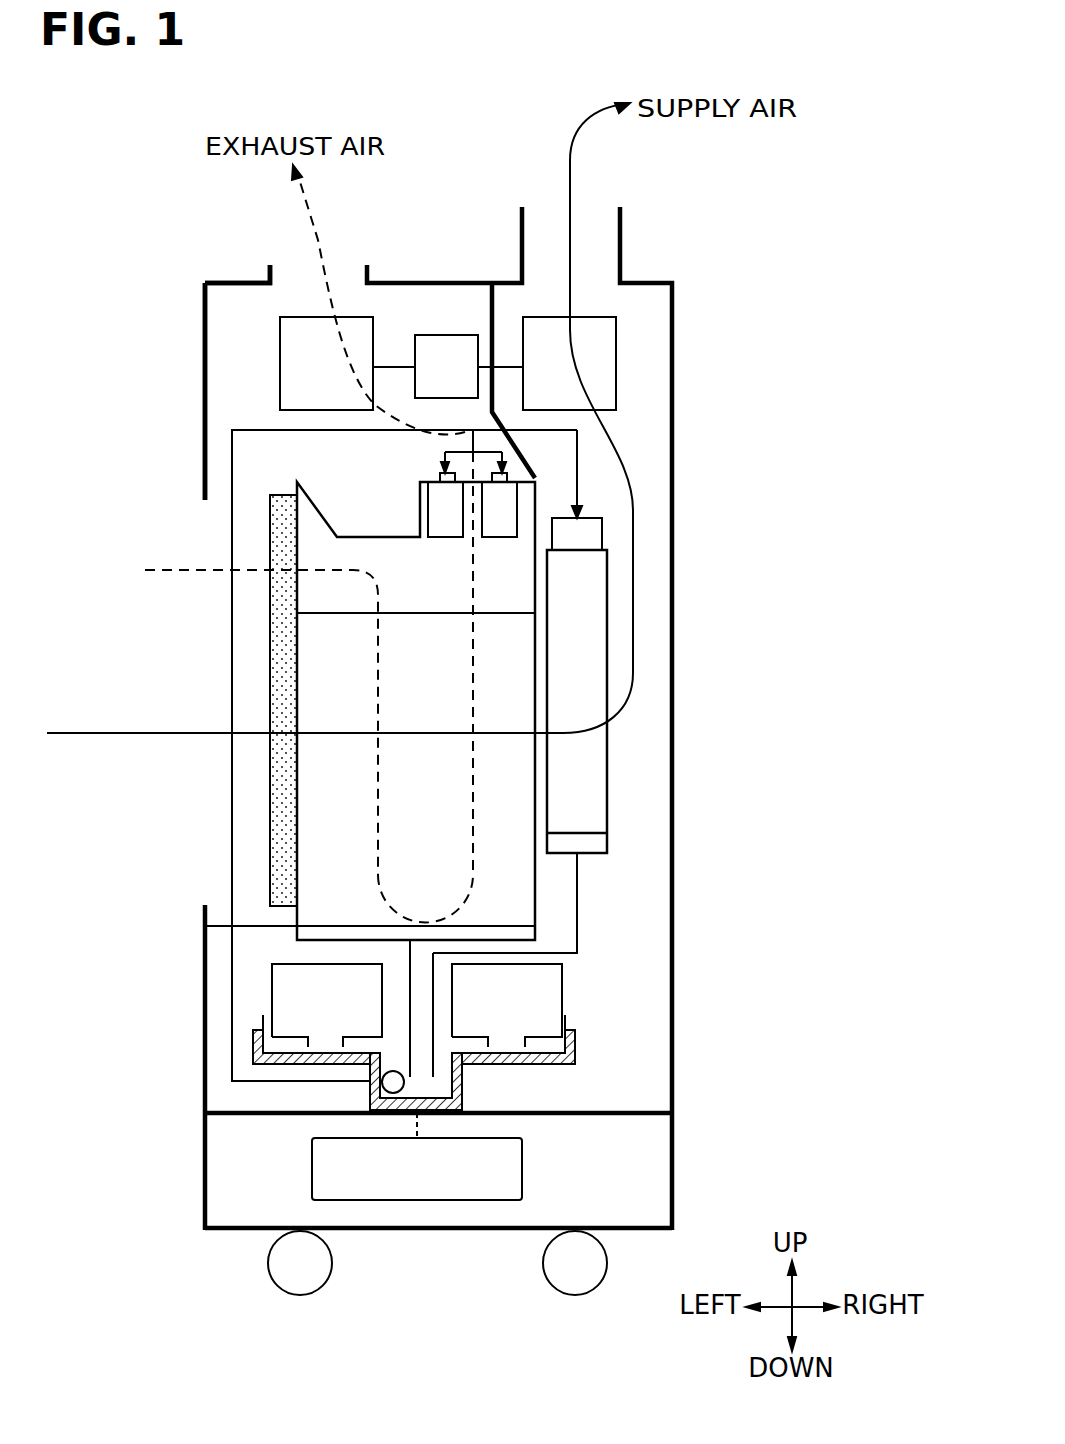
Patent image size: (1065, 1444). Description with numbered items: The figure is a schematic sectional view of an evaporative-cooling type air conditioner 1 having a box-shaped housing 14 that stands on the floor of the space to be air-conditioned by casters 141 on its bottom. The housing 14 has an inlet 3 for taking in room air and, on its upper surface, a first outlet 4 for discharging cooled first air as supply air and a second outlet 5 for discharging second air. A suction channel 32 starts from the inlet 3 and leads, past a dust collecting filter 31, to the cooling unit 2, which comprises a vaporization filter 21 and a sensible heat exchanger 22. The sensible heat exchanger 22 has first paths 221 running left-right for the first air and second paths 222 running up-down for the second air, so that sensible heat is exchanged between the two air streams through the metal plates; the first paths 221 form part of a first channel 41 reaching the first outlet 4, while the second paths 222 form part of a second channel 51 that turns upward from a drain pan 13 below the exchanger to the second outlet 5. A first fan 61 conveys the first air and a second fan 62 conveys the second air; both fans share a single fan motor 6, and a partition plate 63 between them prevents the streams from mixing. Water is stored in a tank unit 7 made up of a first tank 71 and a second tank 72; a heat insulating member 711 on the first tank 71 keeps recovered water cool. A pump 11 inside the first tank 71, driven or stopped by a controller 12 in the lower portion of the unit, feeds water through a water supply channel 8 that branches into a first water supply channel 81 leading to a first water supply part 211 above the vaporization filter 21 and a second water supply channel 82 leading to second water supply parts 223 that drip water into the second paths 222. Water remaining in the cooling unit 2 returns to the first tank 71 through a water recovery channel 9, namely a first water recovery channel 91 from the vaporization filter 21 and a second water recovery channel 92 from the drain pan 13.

The air conditioner 1 is at (96, 127).
The cooling unit 2 is at (618, 735).
The vaporization filter 21 is at (607, 795).
The first water supply part 211 is at (602, 530).
The sensible heat exchanger 22 is at (578, 872).
The first paths 221 is at (333, 921).
The second paths 222 is at (335, 613).
The second water supply parts 223 is at (438, 518).
The inlet 3 is at (205, 762).
The dust collecting filter 31 is at (276, 682).
The suction channel 32 is at (219, 921).
The first outlet 4 is at (620, 215).
The first channel 41 is at (640, 430).
The second outlet 5 is at (275, 268).
The second channel 51 is at (285, 301).
The fan motor 6 is at (445, 335).
The first fan 61 is at (616, 340).
The second fan 62 is at (280, 357).
The partition plate 63 is at (495, 310).
The tank unit 7 is at (522, 1036).
The first tank 71 is at (575, 1040).
The heat insulating member 711 is at (555, 1066).
The second tank 72 is at (562, 985).
The water supply channel 8 is at (228, 997).
The first water supply channel 81 is at (578, 478).
The second water supply channel 82 is at (462, 437).
The water recovery channel 9 is at (656, 987).
The first water recovery channel 91 is at (435, 1000).
The second water recovery channel 92 is at (412, 980).
The pump 11 is at (369, 1099).
The controller 12 is at (419, 1200).
The drain pan 13 is at (290, 933).
The housing 14 is at (672, 1165).
The casters 141 is at (300, 1295).